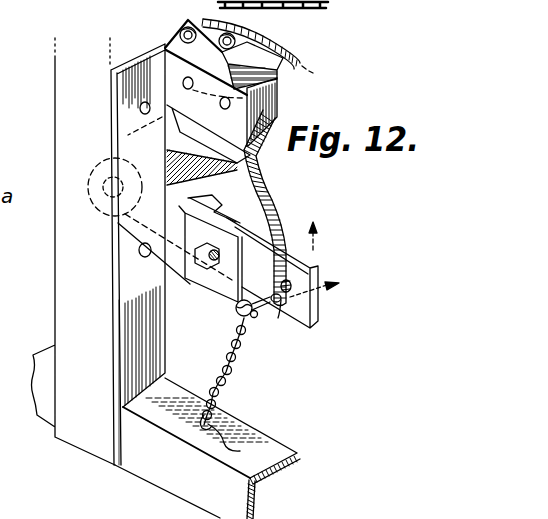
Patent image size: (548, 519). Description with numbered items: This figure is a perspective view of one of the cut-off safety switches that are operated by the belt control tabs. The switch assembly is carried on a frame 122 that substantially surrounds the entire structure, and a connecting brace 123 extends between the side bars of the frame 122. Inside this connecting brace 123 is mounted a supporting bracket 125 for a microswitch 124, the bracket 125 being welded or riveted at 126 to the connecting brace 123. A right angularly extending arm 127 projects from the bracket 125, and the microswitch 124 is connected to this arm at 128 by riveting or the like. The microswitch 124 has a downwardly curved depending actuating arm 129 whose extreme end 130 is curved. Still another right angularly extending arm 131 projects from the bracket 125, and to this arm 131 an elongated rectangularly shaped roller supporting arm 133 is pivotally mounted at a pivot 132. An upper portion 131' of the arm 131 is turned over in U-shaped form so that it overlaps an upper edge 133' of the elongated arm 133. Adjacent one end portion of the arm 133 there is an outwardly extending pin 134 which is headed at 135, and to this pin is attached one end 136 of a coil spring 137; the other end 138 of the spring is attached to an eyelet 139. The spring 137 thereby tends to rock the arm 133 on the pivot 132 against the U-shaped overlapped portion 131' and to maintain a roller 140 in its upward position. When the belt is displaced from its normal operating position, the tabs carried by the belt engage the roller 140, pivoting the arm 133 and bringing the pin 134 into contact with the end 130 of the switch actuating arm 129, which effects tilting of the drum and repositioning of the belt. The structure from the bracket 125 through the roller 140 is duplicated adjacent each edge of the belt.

The frame 122 is at (288, 457).
The connecting brace 123 is at (62, 87).
The microswitch 124 is at (279, 81).
The supporting bracket 125 is at (121, 104).
The weld or rivet connection 126 is at (140, 257).
The right angularly extending arm 127 is at (290, 99).
The rivet connection 128 is at (181, 78).
The actuating arm 129 is at (317, 247).
The curved end 130 is at (291, 300).
The right angularly extending arm 131 is at (254, 207).
The U-shaped upper portion 131' is at (219, 197).
The pivot 132 is at (199, 270).
The roller supporting arm 133 is at (307, 274).
The upper edge 133' is at (340, 278).
The pin 134 is at (280, 300).
The pin head 135 is at (236, 316).
The spring end 136 is at (256, 312).
The coil spring 137 is at (224, 360).
The other spring end 138 is at (214, 419).
The eyelet 139 is at (239, 443).
The roller 140 is at (182, 160).